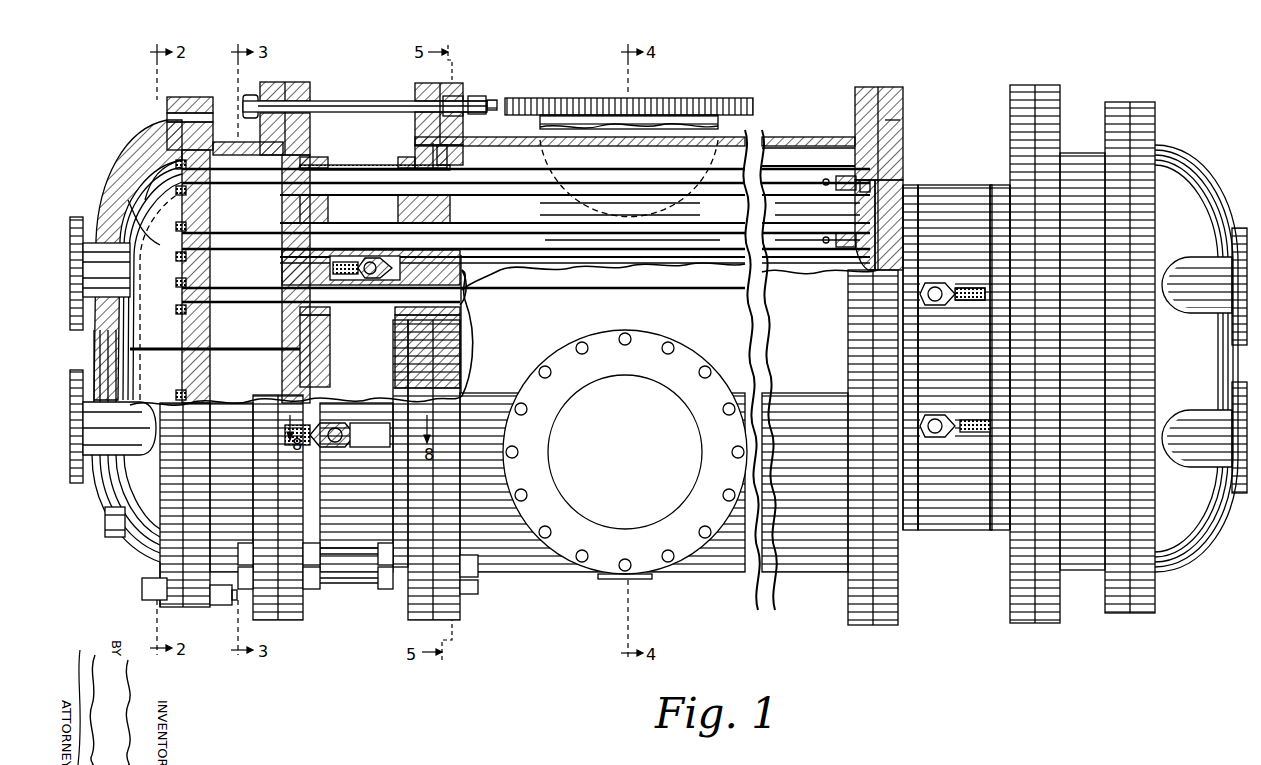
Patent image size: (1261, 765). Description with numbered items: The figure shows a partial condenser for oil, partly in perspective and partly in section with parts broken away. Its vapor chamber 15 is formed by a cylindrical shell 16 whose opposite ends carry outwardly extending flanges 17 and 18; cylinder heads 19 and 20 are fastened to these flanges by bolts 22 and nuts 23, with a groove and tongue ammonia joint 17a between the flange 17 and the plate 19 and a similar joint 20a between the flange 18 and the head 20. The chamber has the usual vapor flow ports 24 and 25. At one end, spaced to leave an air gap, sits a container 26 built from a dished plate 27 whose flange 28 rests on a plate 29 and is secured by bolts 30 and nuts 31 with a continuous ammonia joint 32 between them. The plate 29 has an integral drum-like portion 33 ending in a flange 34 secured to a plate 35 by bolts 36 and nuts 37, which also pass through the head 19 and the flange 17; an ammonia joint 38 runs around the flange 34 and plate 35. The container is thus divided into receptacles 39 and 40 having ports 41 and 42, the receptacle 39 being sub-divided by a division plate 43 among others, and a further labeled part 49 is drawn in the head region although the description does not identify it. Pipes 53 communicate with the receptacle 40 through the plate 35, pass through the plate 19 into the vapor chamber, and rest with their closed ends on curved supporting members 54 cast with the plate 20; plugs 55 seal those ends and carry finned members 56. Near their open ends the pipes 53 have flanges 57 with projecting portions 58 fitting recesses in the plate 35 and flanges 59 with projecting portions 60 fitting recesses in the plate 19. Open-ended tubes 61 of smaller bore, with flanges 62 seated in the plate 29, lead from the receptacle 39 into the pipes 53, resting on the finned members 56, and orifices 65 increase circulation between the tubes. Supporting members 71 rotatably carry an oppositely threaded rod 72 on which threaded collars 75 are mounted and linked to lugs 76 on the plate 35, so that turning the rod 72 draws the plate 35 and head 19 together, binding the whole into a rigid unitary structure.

The vapor chamber 15 is at (762, 158).
The cylindrical shell 16 is at (842, 166).
The flange 17 is at (452, 88).
The groove and tongue ammonia joint 17a is at (475, 122).
The flange 18 is at (868, 87).
The cylinder head 19 is at (436, 84).
The cylinder head 20 is at (890, 92).
The ammonia joint 20a is at (878, 128).
The bolts 22 is at (398, 565).
The nuts 23 is at (470, 570).
The vapor flow port 24 is at (562, 100).
The vapor flow port 25 is at (682, 548).
The container 26 is at (168, 160).
The dished plate 27 is at (128, 178).
The flange 28 is at (172, 97).
The plate 29 is at (196, 97).
The bolts 30 is at (150, 587).
The nuts 31 is at (220, 594).
The ammonia joint 32 is at (205, 145).
The drum-like portion 33 is at (250, 98).
The flange 34 is at (273, 82).
The plate 35 is at (300, 82).
The bolts 36 is at (342, 101).
The nuts 37 is at (486, 100).
The ammonia joint 38 is at (310, 157).
The receptacle 39 is at (140, 300).
The receptacle 40 is at (160, 245).
The port 41 is at (74, 242).
The port 42 is at (72, 432).
The division plate 43 is at (130, 349).
The baffle 49 is at (160, 380).
The pipes 53 is at (405, 157).
The curved supporting members 54 is at (462, 278).
The plugs 55 is at (870, 186).
The finned members 56 is at (842, 178).
The flanges 57 is at (335, 145).
The projecting portions 58 is at (318, 166).
The flanges 59 is at (418, 150).
The projecting portions 60 is at (433, 145).
The open-ended tubes 61 is at (240, 183).
The flanges 62 is at (180, 160).
The orifices 65 is at (825, 182).
The supporting members 71 is at (337, 423).
The rod 72 is at (305, 425).
The collars 75 is at (955, 290).
The lugs 76 is at (330, 270).